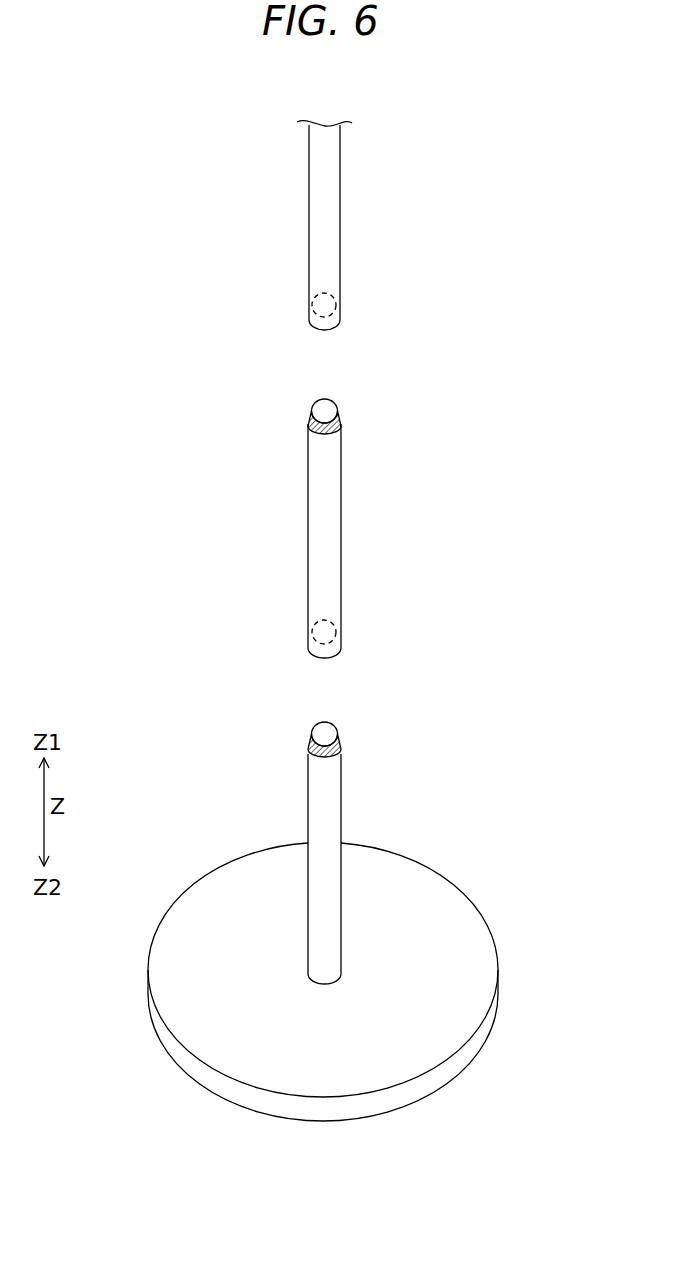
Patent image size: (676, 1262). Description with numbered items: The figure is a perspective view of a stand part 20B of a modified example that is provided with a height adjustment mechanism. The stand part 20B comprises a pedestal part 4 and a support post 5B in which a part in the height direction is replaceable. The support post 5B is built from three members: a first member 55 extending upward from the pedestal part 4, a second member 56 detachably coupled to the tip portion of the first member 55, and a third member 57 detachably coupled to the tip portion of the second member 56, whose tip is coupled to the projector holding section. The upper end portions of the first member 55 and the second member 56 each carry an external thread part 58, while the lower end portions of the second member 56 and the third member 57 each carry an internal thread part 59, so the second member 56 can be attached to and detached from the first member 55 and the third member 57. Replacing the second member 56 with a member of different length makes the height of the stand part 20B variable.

The stand part 20B is at (165, 211).
The support post 5B is at (457, 778).
The third member 57 is at (340, 234).
The second member 56 is at (341, 562).
The first member 55 is at (342, 790).
The external thread part 58 is at (342, 318).
The internal thread part 59 is at (340, 419).
The pedestal part 4 is at (499, 982).